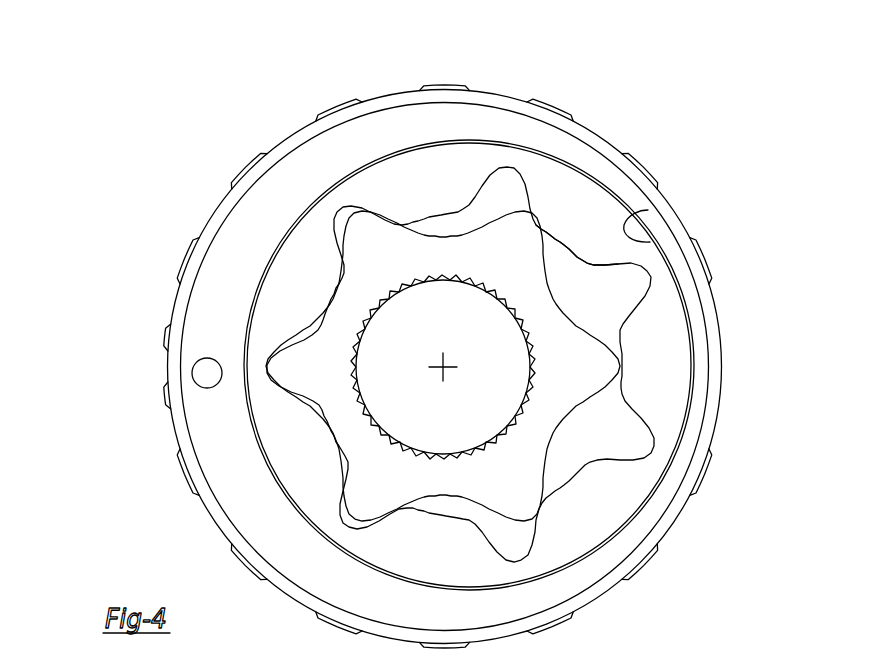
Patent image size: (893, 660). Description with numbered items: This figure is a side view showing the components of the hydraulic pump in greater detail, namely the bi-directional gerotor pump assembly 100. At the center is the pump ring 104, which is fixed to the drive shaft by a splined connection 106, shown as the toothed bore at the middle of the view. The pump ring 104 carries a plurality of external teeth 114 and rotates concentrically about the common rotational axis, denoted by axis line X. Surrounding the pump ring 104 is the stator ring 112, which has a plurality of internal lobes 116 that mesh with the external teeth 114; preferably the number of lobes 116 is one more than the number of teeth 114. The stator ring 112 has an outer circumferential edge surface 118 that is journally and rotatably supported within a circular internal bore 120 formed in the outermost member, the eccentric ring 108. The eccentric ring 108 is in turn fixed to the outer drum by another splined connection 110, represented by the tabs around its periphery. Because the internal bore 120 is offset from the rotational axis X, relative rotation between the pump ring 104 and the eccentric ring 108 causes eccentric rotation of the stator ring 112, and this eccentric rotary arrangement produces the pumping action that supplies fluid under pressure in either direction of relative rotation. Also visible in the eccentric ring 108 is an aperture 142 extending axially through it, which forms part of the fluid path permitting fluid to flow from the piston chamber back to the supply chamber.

The gerotor pump assembly 100 is at (143, 198).
The pump ring 104 is at (337, 295).
The splined connection 106 is at (360, 230).
The eccentric ring 108 is at (210, 320).
The splined connection 110 is at (188, 498).
The stator ring 112 is at (418, 187).
The external teeth 114 is at (347, 303).
The internal lobes 116 is at (565, 242).
The outer circumferential edge surface 118 is at (477, 140).
The internal bore 120 is at (650, 242).
The aperture 142 is at (207, 386).
The rotational axis X is at (447, 360).